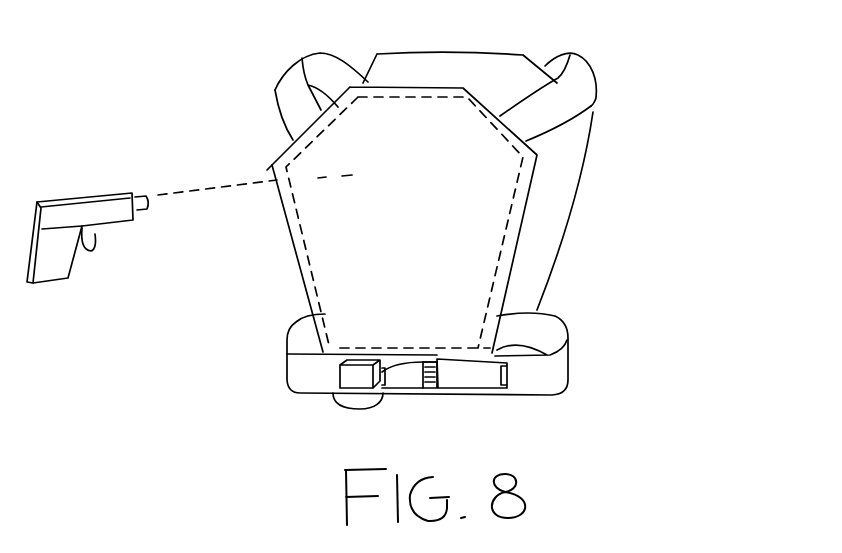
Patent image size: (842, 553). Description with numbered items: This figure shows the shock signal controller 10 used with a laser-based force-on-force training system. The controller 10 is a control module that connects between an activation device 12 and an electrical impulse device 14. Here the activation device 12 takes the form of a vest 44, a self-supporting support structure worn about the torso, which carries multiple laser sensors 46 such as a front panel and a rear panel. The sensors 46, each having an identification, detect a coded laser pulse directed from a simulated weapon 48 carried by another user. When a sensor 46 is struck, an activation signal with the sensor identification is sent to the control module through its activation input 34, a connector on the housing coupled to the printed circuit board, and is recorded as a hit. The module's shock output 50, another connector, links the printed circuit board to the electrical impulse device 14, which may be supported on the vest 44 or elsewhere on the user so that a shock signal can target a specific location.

The shock signal controller 10 is at (483, 380).
The activation device 12 is at (449, 249).
The electrical impulse device 14 is at (352, 373).
The activation input 34 is at (425, 390).
The vest 44 is at (572, 153).
The laser sensors 46 is at (437, 93).
The simulated weapon 48 is at (87, 206).
The shock output 50 is at (424, 357).